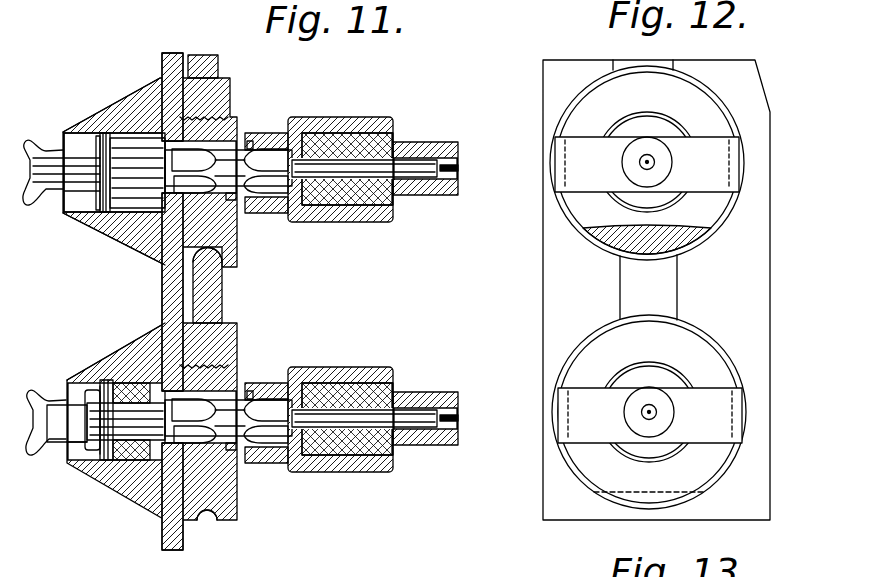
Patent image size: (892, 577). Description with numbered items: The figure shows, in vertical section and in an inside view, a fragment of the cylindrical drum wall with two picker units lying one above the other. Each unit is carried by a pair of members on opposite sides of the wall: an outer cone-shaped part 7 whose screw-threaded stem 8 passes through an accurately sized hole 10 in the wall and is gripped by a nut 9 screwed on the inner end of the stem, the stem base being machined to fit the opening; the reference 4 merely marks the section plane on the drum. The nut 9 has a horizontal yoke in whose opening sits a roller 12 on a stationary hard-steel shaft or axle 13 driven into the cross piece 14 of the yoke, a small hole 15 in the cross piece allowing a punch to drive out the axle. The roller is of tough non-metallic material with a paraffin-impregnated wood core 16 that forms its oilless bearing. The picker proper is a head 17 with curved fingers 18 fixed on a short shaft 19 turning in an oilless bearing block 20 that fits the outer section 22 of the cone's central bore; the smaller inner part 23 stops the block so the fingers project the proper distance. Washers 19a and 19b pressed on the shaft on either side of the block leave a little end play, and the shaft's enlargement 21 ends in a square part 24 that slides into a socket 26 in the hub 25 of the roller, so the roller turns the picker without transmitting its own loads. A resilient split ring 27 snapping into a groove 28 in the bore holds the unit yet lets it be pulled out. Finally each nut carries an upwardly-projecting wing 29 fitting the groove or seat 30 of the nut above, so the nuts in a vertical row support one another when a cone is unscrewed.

In FIG. 11, the fixture frame 4 is at (160, 54).
In FIG. 12, the fixture frame 4 is at (770, 112).
In FIG. 11, the outer cone-shaped part 7 is at (107, 100).
In FIG. 11, the screw-threaded stem 8 is at (232, 125).
In FIG. 11, the nut 9 is at (232, 80).
In FIG. 12, the nut 9 is at (712, 107).
In FIG. 11, the hole 10 is at (150, 112).
In FIG. 11, the roller 12 is at (345, 118).
In FIG. 12, the roller 12 is at (657, 113).
In FIG. 11, the shaft or axle 13 is at (412, 173).
In FIG. 11, the cross piece 14 is at (440, 143).
In FIG. 12, the cross piece 14 is at (648, 290).
In FIG. 11, the small hole 15 is at (458, 168).
In FIG. 12, the small hole 15 is at (640, 163).
In FIG. 11, the central core 16 is at (390, 137).
In FIG. 12, the central core 16 is at (637, 133).
In FIG. 11, the head 17 is at (88, 193).
In FIG. 11, the curved prongs or fingers 18 is at (32, 206).
In FIG. 11, the short shaft 19 is at (140, 423).
In FIG. 11, the washer 19a is at (67, 423).
In FIG. 11, the washer 19b is at (228, 293).
In FIG. 11, the bearing block 20 is at (140, 197).
In FIG. 11, the enlargement 21 is at (194, 296).
In FIG. 11, the outer section of the bore 22 is at (63, 140).
In FIG. 11, the inner part of the bore 23 is at (231, 198).
In FIG. 11, the square end 24 is at (270, 204).
In FIG. 11, the projecting hub portion 25 is at (262, 134).
In FIG. 11, the socket 26 is at (250, 141).
In FIG. 11, the resilient split ring 27 is at (105, 211).
In FIG. 11, the groove 28 is at (100, 133).
In FIG. 11, the upwardly-projecting wing 29 is at (197, 55).
In FIG. 12, the upwardly-projecting wing 29 is at (627, 60).
In FIG. 11, the groove or seat 30 is at (224, 255).
In FIG. 12, the groove or seat 30 is at (610, 248).